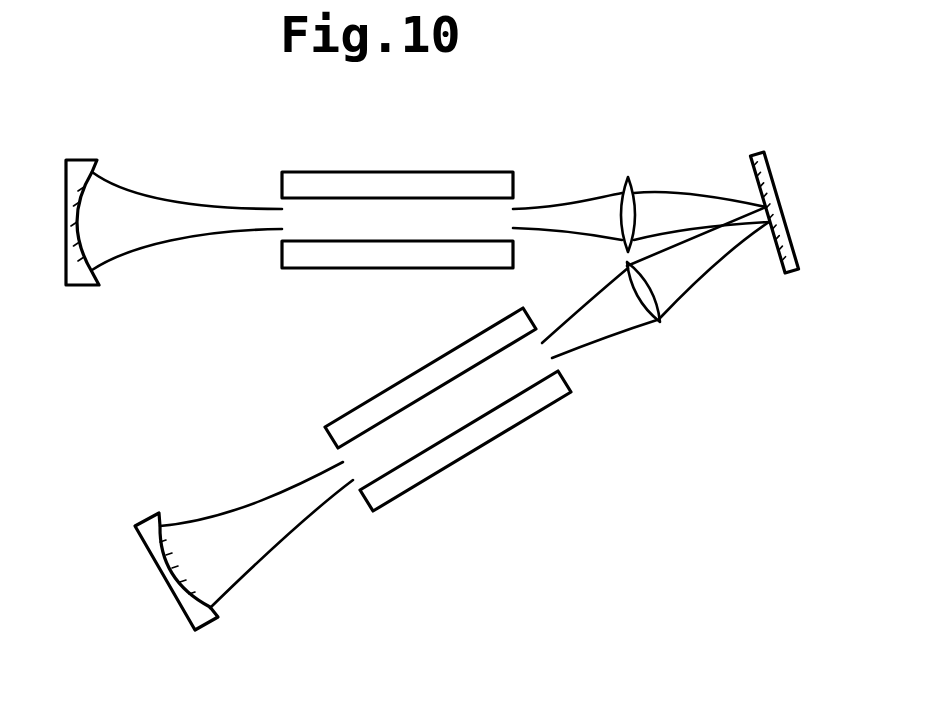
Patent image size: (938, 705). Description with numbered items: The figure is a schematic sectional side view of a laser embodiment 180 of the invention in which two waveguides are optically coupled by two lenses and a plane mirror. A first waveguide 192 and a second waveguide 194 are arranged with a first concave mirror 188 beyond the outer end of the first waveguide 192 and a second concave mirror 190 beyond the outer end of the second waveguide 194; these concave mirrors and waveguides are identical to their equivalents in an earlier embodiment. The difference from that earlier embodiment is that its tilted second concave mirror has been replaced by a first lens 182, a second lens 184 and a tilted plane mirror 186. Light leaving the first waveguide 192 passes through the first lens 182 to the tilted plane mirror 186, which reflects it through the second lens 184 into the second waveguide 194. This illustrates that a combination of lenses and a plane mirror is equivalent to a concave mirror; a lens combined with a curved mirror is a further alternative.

The laser embodiment 180 is at (646, 528).
The first lens 182 is at (632, 196).
The second lens 184 is at (662, 312).
The tilted plane mirror 186 is at (776, 193).
The first concave mirror 188 is at (68, 250).
The second concave mirror 190 is at (145, 545).
The first waveguide 192 is at (479, 176).
The second waveguide 194 is at (497, 428).